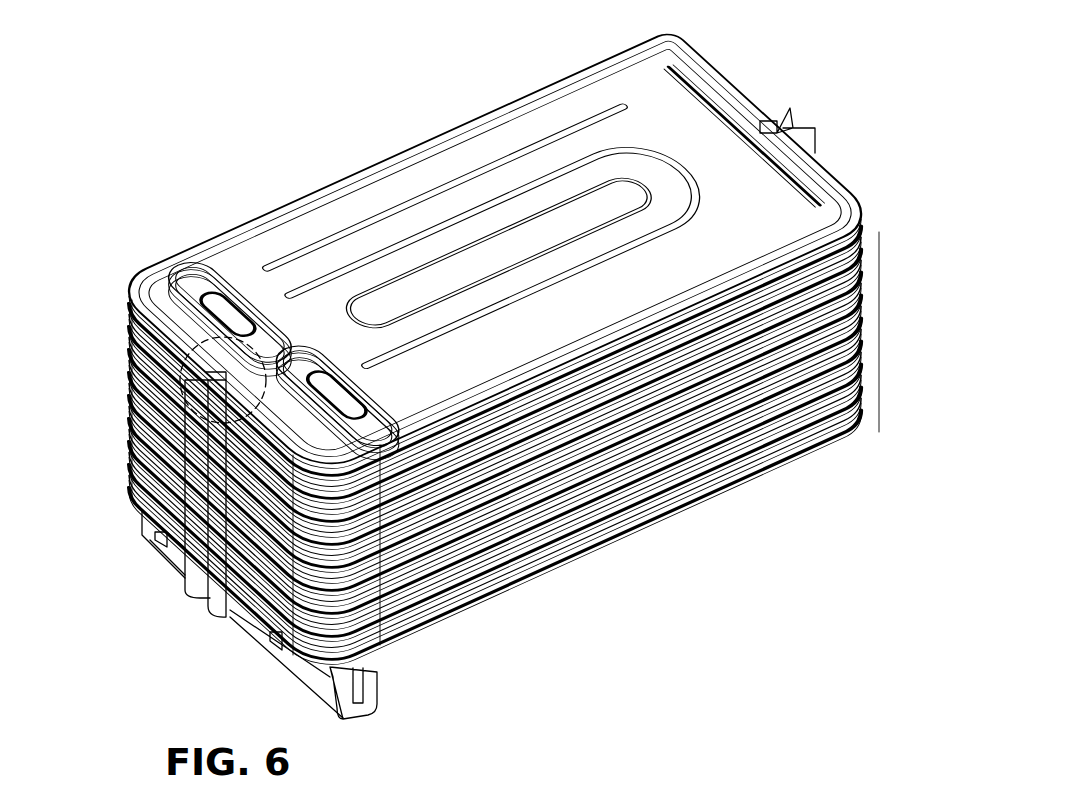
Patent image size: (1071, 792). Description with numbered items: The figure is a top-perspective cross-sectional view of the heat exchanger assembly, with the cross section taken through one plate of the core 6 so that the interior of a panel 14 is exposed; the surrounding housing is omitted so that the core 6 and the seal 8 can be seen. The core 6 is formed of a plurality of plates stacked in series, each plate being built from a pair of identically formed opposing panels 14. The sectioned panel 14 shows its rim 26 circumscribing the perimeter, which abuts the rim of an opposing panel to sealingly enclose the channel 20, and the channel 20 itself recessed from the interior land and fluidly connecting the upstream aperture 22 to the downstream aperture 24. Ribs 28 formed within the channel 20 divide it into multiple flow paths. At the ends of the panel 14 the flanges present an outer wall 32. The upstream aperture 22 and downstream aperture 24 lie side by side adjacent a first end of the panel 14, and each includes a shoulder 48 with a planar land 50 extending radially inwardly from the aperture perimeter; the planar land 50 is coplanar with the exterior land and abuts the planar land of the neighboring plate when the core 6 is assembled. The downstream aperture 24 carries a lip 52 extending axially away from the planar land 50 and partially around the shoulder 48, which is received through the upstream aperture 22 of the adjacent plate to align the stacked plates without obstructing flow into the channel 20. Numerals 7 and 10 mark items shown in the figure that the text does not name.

The core 6 is at (488, 338).
The detail region 7 is at (180, 378).
The seal 8 is at (180, 578).
The mounting foot 10 is at (383, 681).
The panel 14 is at (455, 249).
The channel 20 is at (499, 253).
The upstream aperture 22 is at (337, 395).
The downstream aperture 24 is at (228, 314).
The rim 26 is at (495, 252).
The ribs 28 is at (494, 236).
The outer wall 32 is at (700, 46).
The shoulder 48 is at (744, 136).
The planar land 50 is at (229, 312).
The lip 52 is at (208, 300).